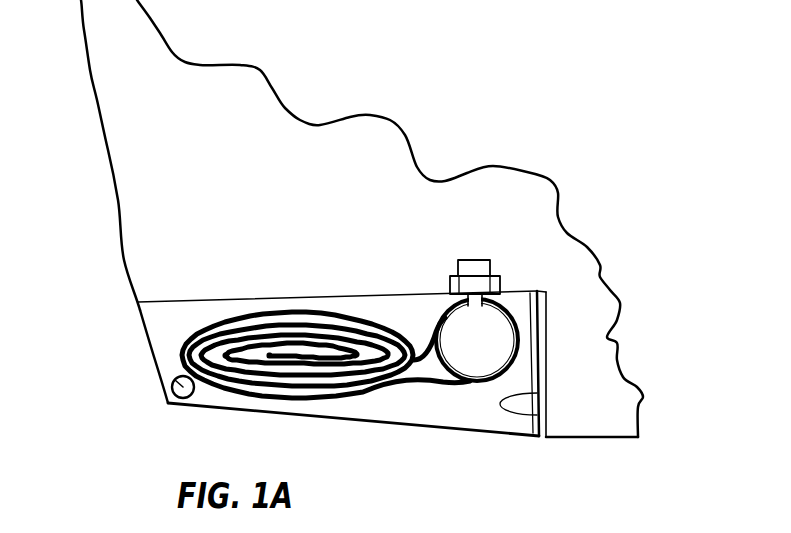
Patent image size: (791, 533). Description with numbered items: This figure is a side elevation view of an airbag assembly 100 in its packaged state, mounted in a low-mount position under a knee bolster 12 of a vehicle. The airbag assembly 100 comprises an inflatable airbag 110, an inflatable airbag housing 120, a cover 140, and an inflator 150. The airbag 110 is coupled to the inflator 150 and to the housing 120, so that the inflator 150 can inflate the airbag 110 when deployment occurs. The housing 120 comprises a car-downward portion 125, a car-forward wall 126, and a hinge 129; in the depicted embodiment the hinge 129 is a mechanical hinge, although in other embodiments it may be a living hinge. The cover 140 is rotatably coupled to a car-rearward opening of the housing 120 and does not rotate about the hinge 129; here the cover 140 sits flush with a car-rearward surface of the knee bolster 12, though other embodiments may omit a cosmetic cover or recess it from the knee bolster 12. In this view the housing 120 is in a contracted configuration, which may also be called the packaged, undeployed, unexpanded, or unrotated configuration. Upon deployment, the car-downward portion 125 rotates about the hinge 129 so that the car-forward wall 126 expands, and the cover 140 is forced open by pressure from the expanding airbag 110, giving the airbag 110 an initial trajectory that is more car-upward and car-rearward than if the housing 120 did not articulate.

The airbag assembly 100 is at (367, 252).
The knee bolster 12 is at (291, 223).
The inflatable airbag 110 is at (204, 318).
The inflatable airbag housing 120 is at (290, 397).
The car-downward portion 125 is at (396, 427).
The car-forward wall 126 is at (537, 415).
The hinge 129 is at (170, 383).
The cover 140 is at (143, 323).
The inflator 150 is at (478, 342).